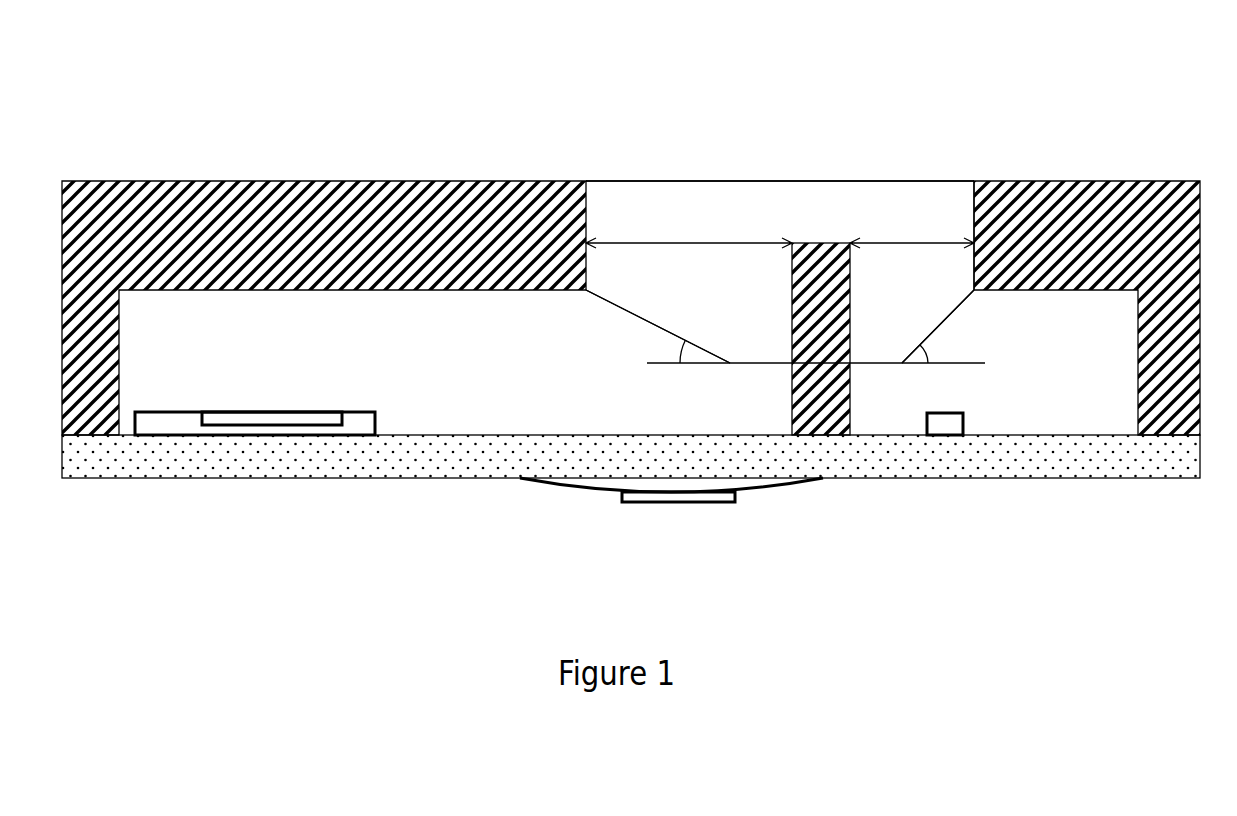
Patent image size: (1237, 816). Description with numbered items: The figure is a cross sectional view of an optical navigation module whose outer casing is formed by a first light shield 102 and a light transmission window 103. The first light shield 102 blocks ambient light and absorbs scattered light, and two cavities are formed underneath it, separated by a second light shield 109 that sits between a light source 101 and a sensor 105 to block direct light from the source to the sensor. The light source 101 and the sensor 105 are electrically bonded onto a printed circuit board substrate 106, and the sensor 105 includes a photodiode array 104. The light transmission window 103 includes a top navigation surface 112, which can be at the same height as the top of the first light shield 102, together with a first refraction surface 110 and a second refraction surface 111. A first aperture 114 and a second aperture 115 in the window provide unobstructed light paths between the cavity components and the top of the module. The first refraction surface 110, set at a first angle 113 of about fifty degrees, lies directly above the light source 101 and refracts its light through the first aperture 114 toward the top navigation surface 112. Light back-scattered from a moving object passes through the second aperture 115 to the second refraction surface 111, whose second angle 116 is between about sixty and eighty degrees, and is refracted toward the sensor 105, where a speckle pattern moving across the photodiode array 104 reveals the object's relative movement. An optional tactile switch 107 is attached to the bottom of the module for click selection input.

The light source 101 is at (963, 430).
The first light shield 102 is at (390, 190).
The light transmission window 103 is at (746, 208).
The photodiode array 104 is at (232, 412).
The sensor 105 is at (188, 427).
The printed circuit board substrate 106 is at (435, 455).
The tactile switch 107 is at (735, 500).
The second light shield 109 is at (830, 243).
The first refraction surface 110 is at (920, 340).
The second refraction surface 111 is at (632, 320).
The top navigation surface 112 is at (797, 181).
The first angle 113 is at (938, 348).
The first aperture 114 is at (947, 250).
The second aperture 115 is at (685, 248).
The second angle 116 is at (672, 348).